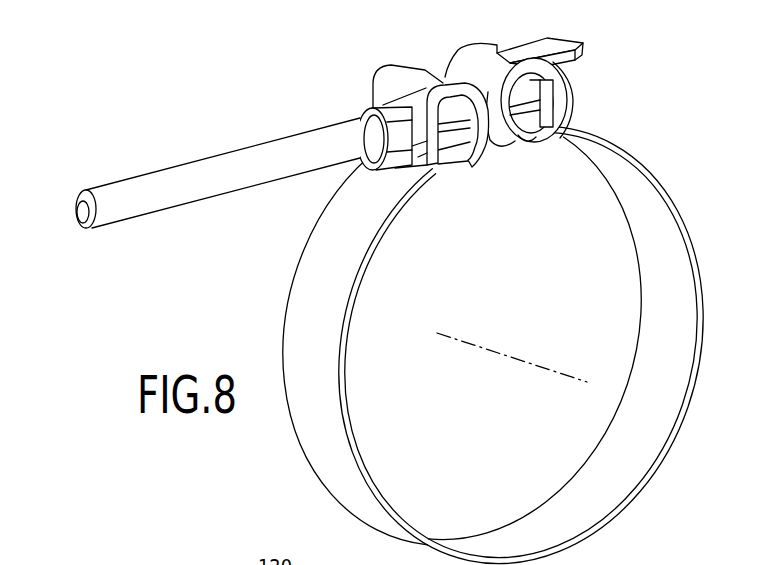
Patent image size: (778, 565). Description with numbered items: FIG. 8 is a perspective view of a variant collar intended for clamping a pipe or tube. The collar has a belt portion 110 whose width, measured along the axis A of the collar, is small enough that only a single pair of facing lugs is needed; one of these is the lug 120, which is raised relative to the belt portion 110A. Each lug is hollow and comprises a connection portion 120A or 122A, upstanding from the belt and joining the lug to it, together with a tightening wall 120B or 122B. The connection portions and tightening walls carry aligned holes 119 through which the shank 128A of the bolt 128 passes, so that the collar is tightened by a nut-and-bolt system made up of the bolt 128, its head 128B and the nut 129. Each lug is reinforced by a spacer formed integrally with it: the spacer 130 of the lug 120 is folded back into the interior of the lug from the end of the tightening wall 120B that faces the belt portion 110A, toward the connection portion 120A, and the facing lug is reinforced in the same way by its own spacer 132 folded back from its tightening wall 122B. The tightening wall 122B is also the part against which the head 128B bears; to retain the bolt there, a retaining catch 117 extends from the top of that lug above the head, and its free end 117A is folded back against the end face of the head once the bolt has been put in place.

The belt portion 110 is at (528, 344).
The belt portion 110A is at (700, 284).
The retaining catch 117 is at (567, 35).
The free end of retaining catch 117A is at (576, 58).
The aligned holes 119 is at (450, 72).
The lug 120 is at (393, 135).
The connection portion 120A is at (401, 71).
The tightening wall 120B is at (436, 172).
The connection portion 122A is at (538, 99).
The tightening wall 122B is at (570, 122).
The bolt 128 is at (218, 205).
The shank 128A is at (223, 168).
The head 128B is at (574, 94).
The nut 129 is at (378, 103).
The spacer 130 is at (470, 140).
The clip tab 132 is at (527, 135).
The axis A is at (572, 383).